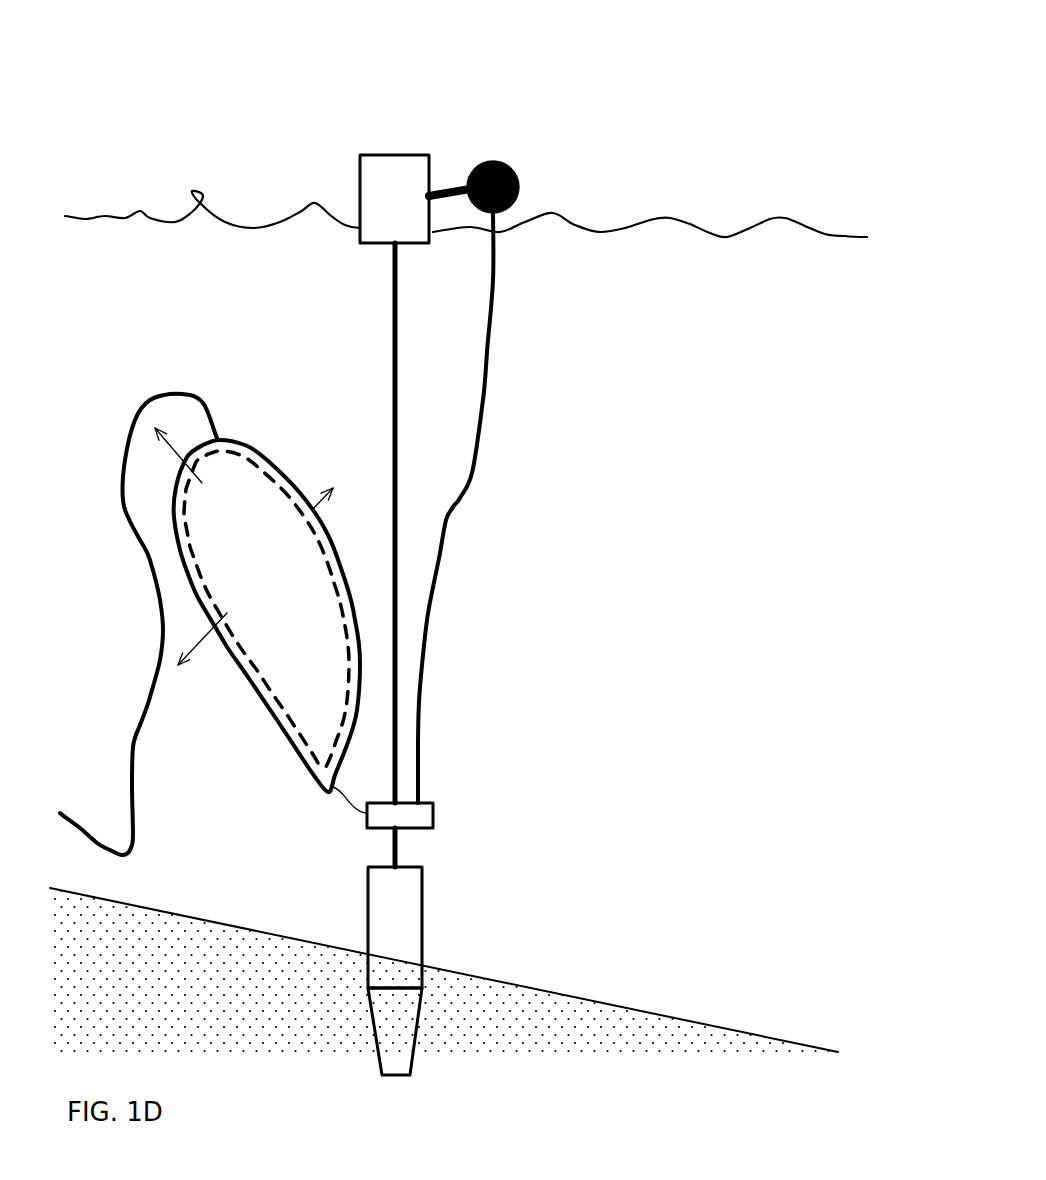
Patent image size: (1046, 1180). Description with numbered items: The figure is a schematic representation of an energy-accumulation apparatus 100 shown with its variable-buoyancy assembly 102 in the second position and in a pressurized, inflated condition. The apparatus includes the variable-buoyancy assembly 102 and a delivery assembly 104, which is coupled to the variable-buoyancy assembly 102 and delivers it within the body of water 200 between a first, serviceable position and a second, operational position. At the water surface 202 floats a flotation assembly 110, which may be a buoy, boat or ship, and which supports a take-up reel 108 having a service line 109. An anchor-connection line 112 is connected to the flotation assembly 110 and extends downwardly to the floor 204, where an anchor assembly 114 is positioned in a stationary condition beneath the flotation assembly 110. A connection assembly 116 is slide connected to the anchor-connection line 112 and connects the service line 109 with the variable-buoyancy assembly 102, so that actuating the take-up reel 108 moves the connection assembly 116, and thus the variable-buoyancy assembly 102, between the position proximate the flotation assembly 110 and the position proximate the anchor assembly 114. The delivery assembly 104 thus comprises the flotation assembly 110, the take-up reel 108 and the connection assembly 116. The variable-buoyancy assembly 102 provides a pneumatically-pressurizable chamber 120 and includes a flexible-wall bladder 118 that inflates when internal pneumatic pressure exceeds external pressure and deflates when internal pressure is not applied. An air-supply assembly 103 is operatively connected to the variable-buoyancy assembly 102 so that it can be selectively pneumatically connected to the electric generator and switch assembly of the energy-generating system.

The energy-accumulation apparatus 100 is at (407, 547).
The variable-buoyancy assembly 102 is at (90, 533).
The air-supply assembly 103 is at (127, 760).
The delivery assembly 104 is at (460, 88).
The take-up reel 108 is at (510, 173).
The service line 109 is at (487, 397).
The flotation assembly 110 is at (393, 153).
The anchor-connection line 112 is at (393, 347).
The anchor assembly 114 is at (422, 927).
The connection assembly 116 is at (437, 813).
The flexible-wall bladder 118 is at (180, 573).
The pneumatically-pressurizable chamber 120 is at (293, 720).
The body of water 200 is at (800, 275).
The water surface 202 is at (97, 220).
The floor 204 is at (592, 1001).